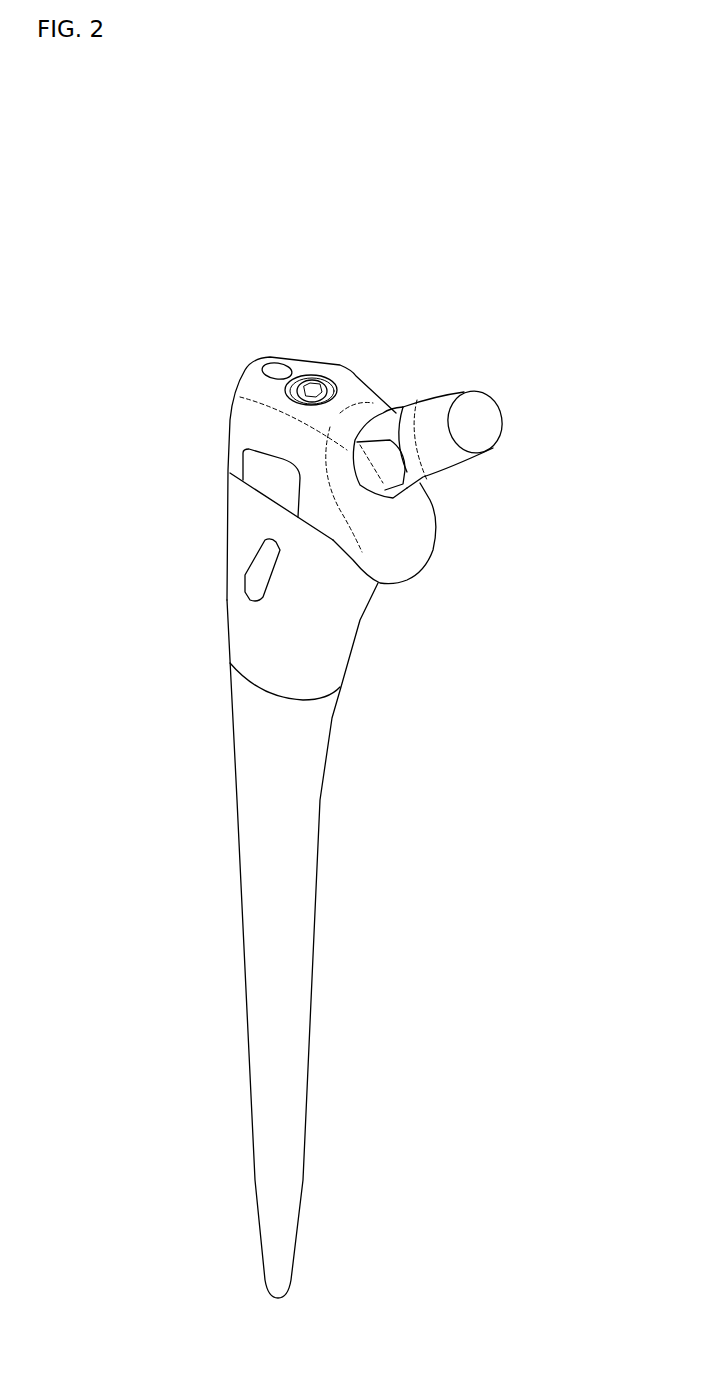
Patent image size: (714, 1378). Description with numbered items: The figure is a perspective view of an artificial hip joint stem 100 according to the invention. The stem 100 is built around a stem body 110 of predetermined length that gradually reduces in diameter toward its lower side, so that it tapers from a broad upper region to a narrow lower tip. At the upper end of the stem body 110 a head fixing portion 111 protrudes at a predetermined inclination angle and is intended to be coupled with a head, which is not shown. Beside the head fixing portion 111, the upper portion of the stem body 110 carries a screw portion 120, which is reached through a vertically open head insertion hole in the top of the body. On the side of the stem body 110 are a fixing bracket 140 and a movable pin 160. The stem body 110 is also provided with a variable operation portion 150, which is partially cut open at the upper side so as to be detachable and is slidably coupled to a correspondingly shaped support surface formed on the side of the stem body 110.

The artificial hip joint stem 100 is at (313, 145).
The stem body 110 is at (295, 1017).
The head fixing portion 111 is at (480, 407).
The screw portion 120 is at (313, 386).
The fixing bracket 140 is at (260, 477).
The variable operation portion 150 is at (338, 638).
The movable pin 160 is at (263, 570).